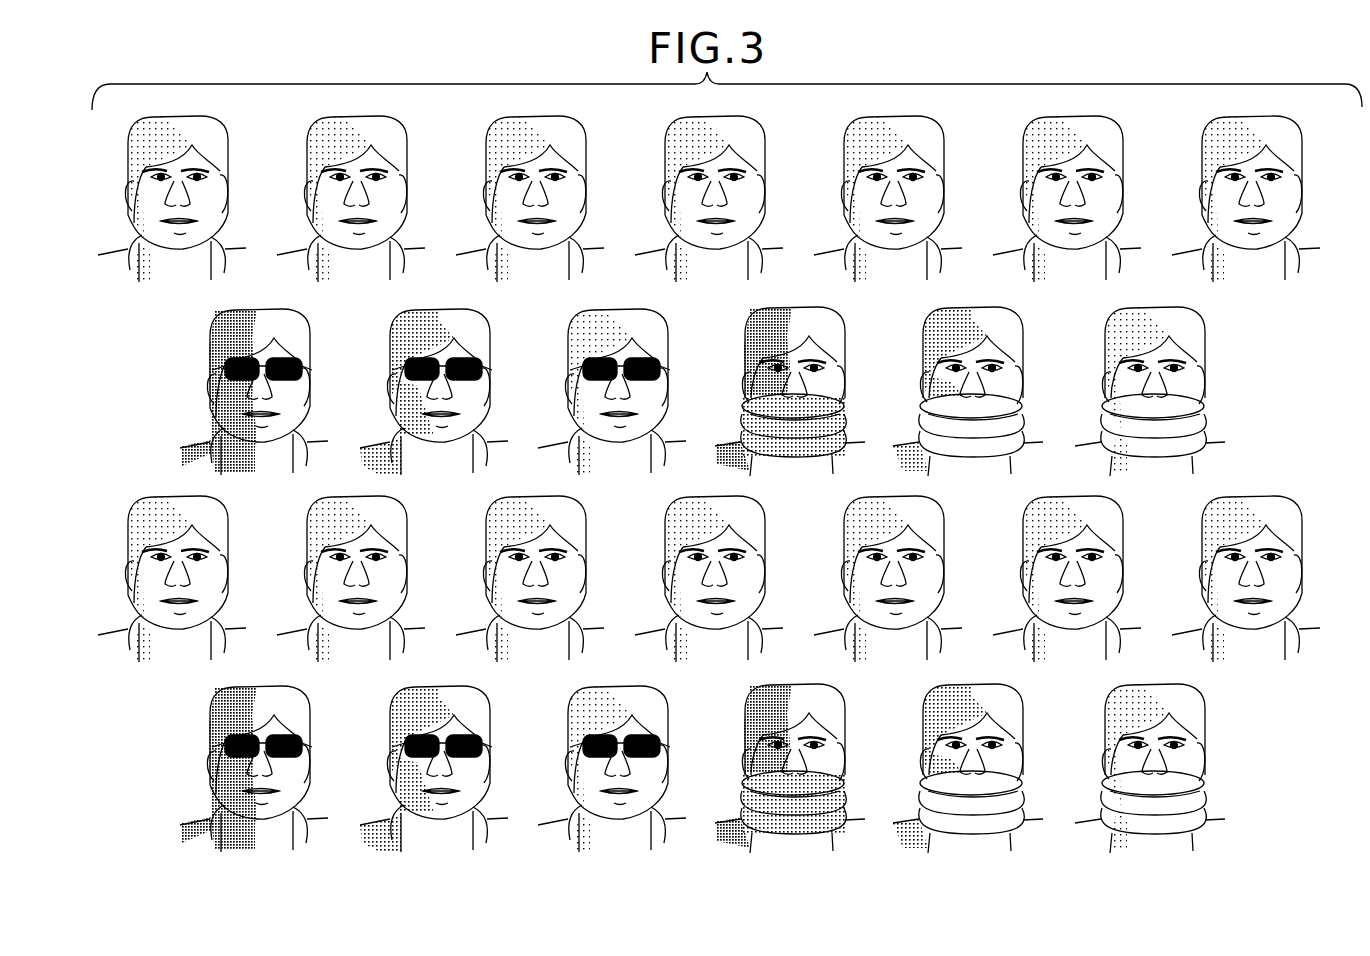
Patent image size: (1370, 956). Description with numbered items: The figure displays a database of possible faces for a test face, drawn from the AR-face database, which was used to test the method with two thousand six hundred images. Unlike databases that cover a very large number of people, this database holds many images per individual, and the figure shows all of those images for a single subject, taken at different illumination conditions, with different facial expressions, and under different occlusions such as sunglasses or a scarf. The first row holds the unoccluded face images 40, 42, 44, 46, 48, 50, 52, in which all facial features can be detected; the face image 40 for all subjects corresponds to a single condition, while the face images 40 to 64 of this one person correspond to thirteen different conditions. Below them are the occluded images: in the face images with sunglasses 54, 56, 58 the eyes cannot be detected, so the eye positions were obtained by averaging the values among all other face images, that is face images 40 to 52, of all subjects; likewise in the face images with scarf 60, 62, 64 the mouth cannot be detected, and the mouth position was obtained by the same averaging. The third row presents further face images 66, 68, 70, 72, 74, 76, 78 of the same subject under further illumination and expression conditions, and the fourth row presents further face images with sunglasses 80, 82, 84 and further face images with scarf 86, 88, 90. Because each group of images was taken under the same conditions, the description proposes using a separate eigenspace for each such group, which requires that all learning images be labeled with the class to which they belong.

The face image 40 is at (188, 198).
The face image 42 is at (367, 198).
The face image 44 is at (546, 198).
The face image 46 is at (725, 198).
The face image 48 is at (904, 198).
The face image 50 is at (1083, 198).
The face image 52 is at (1262, 198).
The face image with sunglasses 54 is at (270, 391).
The face image with sunglasses 56 is at (449, 391).
The face image with sunglasses 58 is at (628, 391).
The face image with scarf 60 is at (806, 391).
The face image with scarf 62 is at (984, 391).
The face image with scarf 64 is at (1165, 391).
The face image 66 is at (187, 578).
The face image 68 is at (366, 578).
The face image 70 is at (545, 578).
The face image 72 is at (724, 578).
The face image 74 is at (903, 578).
The face image 76 is at (1082, 578).
The face image 78 is at (1261, 578).
The face image with sunglasses 80 is at (270, 768).
The face image with sunglasses 82 is at (449, 768).
The face image with sunglasses 84 is at (628, 768).
The face image with scarf 86 is at (806, 768).
The face image with scarf 88 is at (984, 768).
The face image with scarf 90 is at (1165, 768).